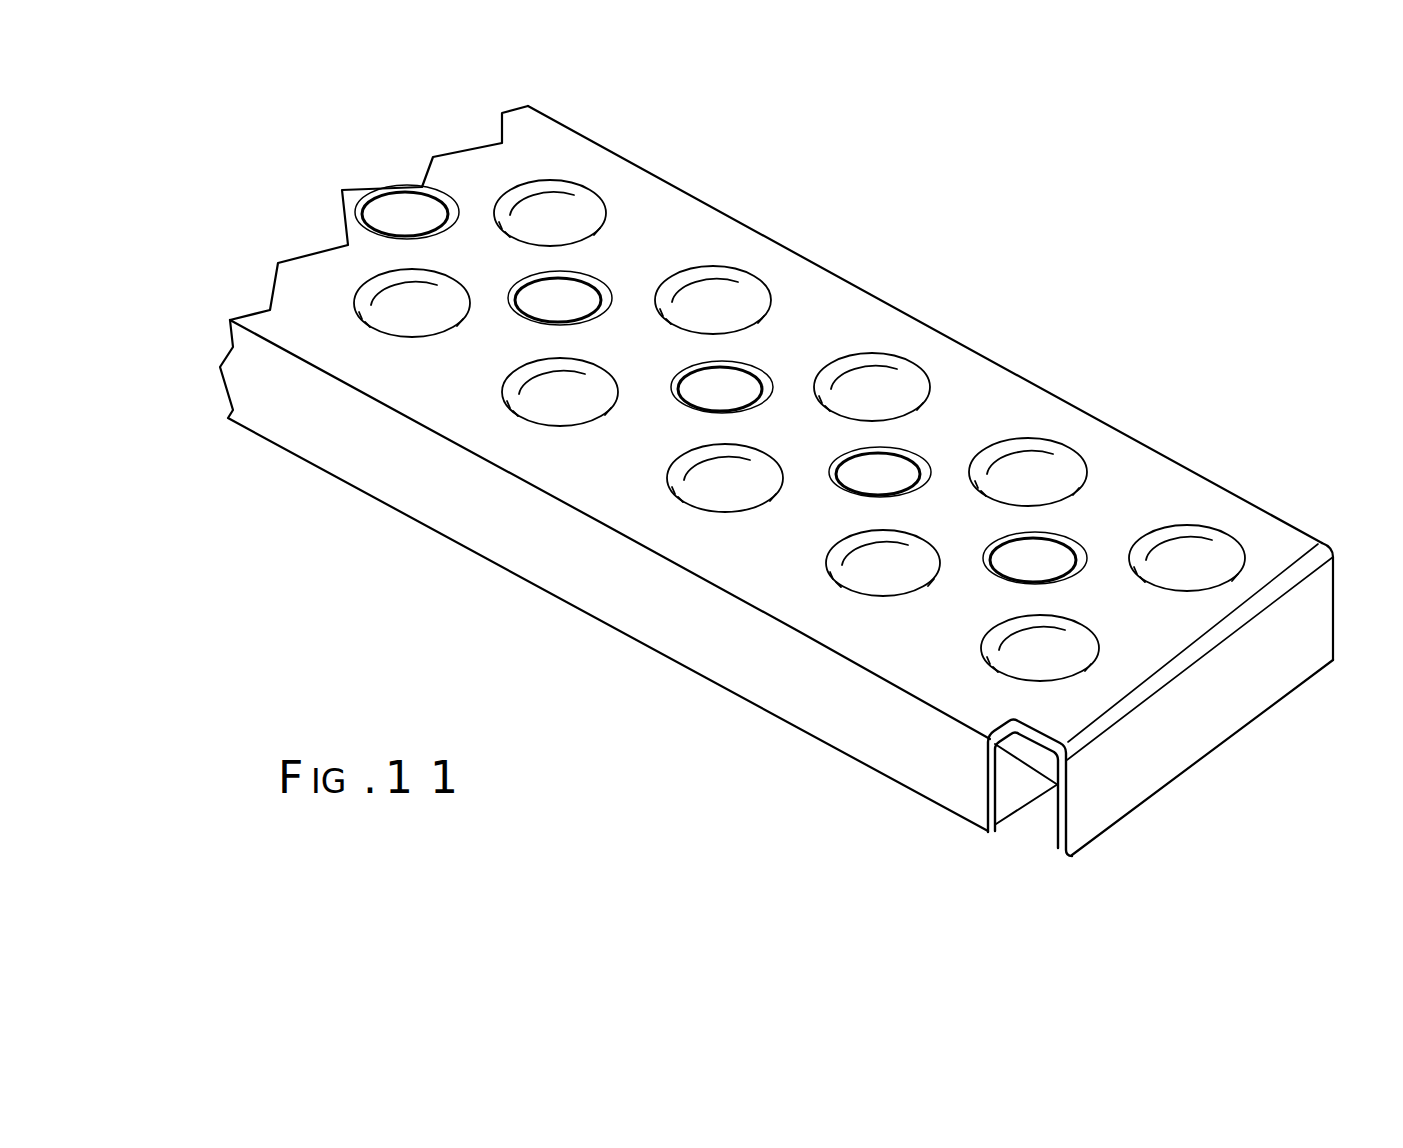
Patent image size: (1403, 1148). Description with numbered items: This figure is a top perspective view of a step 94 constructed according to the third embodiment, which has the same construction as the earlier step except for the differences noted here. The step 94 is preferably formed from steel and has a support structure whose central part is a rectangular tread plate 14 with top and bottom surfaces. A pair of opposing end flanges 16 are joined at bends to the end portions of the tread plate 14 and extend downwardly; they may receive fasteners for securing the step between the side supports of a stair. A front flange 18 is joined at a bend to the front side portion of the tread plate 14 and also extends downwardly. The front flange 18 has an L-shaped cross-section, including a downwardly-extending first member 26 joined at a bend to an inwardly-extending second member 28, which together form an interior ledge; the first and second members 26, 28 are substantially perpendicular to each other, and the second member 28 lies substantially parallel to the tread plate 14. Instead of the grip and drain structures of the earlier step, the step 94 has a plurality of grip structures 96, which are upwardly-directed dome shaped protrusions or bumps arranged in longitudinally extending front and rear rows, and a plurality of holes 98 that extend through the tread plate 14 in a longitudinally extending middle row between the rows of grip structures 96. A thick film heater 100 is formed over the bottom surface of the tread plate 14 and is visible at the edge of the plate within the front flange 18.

The step 94 is at (793, 220).
The tread plate 14 is at (985, 388).
The grip structures 96 is at (912, 362).
The holes 98 is at (1065, 543).
The front flange 18 is at (797, 683).
The end flanges 16 is at (1125, 760).
The first member 26 is at (967, 780).
The second member 28 is at (1008, 806).
The thick film heater 100 is at (1043, 745).